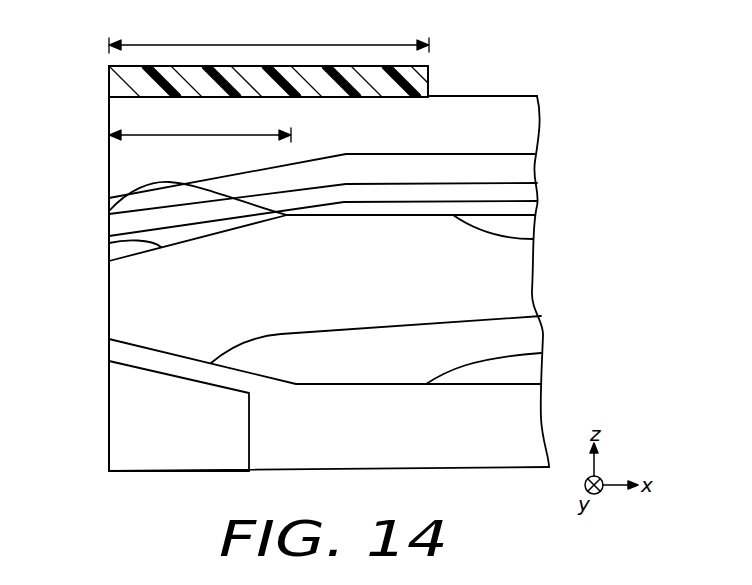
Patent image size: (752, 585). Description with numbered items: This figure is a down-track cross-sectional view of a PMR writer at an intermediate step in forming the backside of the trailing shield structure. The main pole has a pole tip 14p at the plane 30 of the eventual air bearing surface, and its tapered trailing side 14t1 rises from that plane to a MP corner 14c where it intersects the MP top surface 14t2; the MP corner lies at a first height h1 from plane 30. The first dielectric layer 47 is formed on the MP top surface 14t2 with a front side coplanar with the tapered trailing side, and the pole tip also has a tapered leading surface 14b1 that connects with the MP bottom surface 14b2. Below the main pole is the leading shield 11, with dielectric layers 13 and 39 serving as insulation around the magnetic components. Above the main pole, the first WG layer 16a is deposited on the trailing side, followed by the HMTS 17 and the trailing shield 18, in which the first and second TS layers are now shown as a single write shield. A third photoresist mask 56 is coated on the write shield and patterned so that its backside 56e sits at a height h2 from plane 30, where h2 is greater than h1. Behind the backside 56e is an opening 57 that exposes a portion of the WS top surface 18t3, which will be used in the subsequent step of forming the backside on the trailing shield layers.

The leading shield 11 is at (125, 412).
The dielectric layer 13 is at (125, 350).
The MP corner 14c is at (165, 182).
The MP tapered trailing side 14t1 is at (108, 243).
The MP top surface 14t2 is at (532, 238).
The pole tip 14p is at (108, 298).
The tapered leading surface 14b1 is at (540, 315).
The MP bottom surface 14b2 is at (540, 352).
The first WG layer 16a is at (528, 190).
The HMTS 17 is at (526, 167).
The trailing shield 18 is at (524, 115).
The WS top surface 18t3 is at (513, 92).
The ABS plane 30 is at (108, 478).
The dielectric layer 39 is at (524, 405).
The first dielectric layer 47 is at (528, 210).
The third photoresist mask 56 is at (120, 91).
The backside 56e is at (428, 88).
The opening 57 is at (477, 74).
The first height h1 is at (200, 126).
The height h2 is at (269, 39).